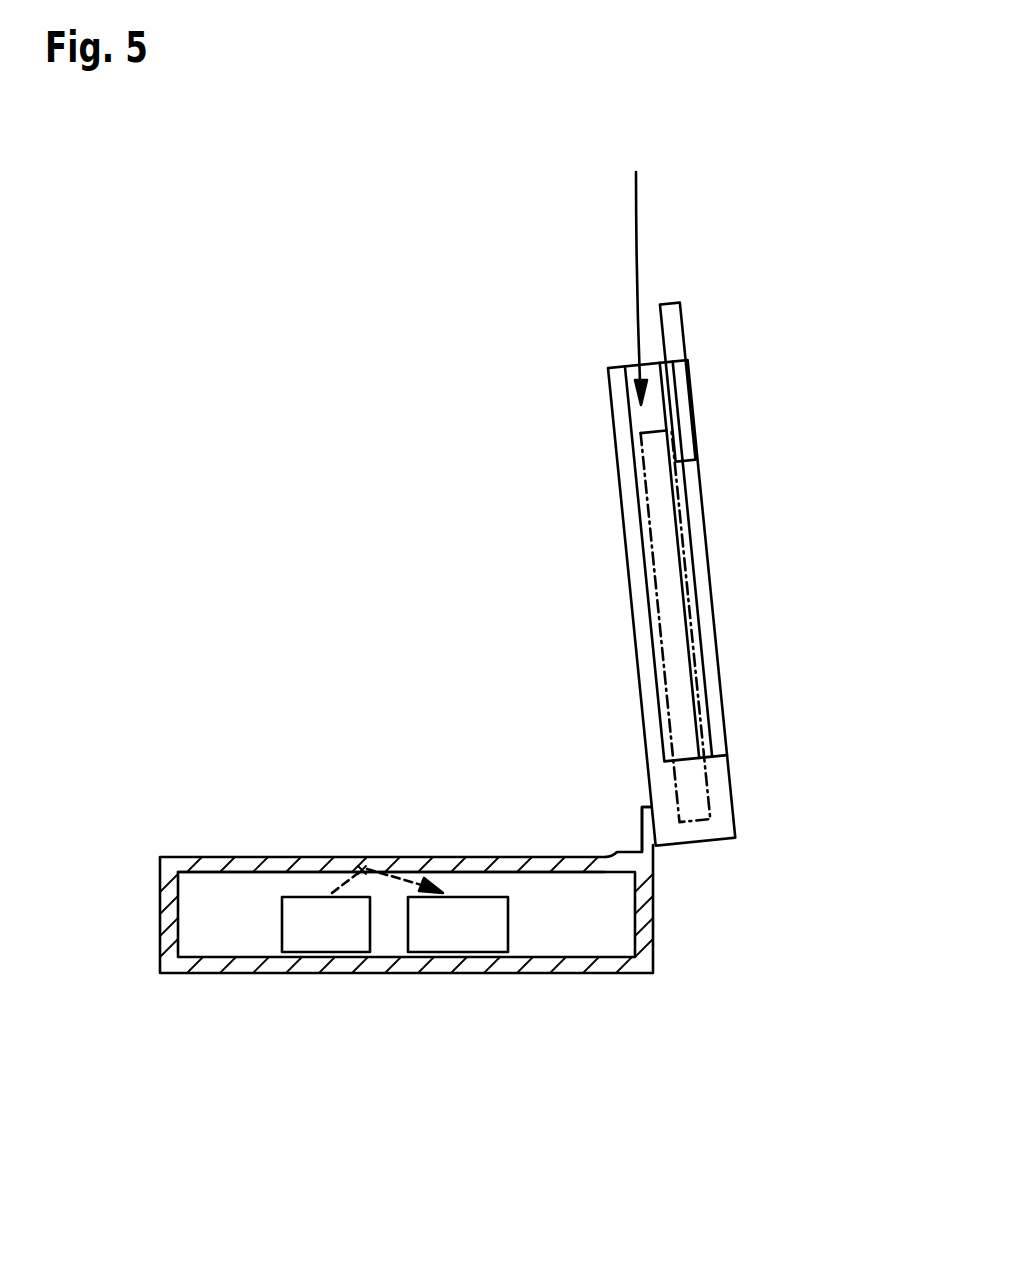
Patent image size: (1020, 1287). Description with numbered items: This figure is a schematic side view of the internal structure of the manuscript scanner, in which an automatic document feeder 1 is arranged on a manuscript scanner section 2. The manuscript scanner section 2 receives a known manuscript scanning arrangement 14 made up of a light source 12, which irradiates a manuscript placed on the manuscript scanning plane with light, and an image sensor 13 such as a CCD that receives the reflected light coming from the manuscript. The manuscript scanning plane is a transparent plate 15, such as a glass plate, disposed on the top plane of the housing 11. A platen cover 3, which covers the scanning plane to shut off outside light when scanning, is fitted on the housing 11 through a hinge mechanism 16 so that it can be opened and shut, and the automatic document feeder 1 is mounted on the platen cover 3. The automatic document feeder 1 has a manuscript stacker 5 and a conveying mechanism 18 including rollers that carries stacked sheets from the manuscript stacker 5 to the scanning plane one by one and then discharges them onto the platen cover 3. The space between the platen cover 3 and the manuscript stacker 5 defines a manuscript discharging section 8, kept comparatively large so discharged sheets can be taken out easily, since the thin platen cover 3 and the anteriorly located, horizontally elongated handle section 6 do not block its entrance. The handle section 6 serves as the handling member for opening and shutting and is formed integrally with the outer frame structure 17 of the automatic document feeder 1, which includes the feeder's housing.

The automatic document feeder 1 is at (510, 644).
The manuscript scanner section 2 is at (448, 917).
The platen cover 3 is at (664, 543).
The manuscript stacker 5 is at (704, 593).
The handle section 6 is at (676, 329).
The manuscript discharging section 8 is at (655, 391).
The housing 11 is at (655, 958).
The light source 12 is at (323, 953).
The image sensor 13 is at (458, 987).
The manuscript scanning arrangement 14 is at (395, 1014).
The transparent plate 15 is at (301, 860).
The hinge mechanism 16 is at (652, 852).
The outer frame structure 17 is at (634, 265).
The conveying mechanism 18 is at (697, 636).